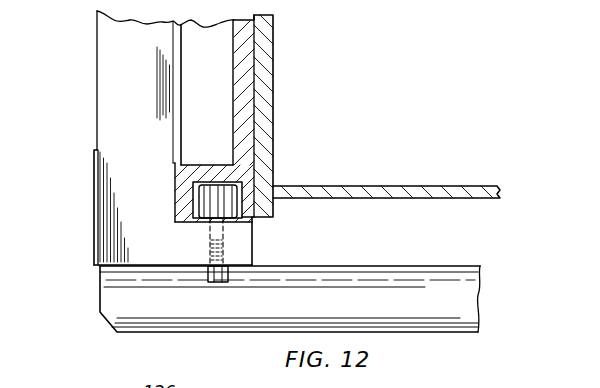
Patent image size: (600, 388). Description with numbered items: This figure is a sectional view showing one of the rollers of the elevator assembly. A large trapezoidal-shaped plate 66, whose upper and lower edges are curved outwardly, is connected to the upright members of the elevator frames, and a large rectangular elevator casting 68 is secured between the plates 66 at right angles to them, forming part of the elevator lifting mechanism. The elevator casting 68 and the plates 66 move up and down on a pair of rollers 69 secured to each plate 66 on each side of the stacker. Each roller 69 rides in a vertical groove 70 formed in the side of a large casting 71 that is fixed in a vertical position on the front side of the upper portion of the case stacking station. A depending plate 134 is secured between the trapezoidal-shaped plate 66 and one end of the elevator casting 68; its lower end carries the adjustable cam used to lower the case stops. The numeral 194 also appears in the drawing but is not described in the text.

The trapezoidal-shaped plate 66 is at (121, 314).
The elevator casting 68 is at (120, 118).
The roller 69 is at (209, 193).
The vertical groove 70 is at (205, 220).
The casting 71 is at (243, 97).
The depending plate 134 is at (94, 270).
The member 194 is at (453, 387).